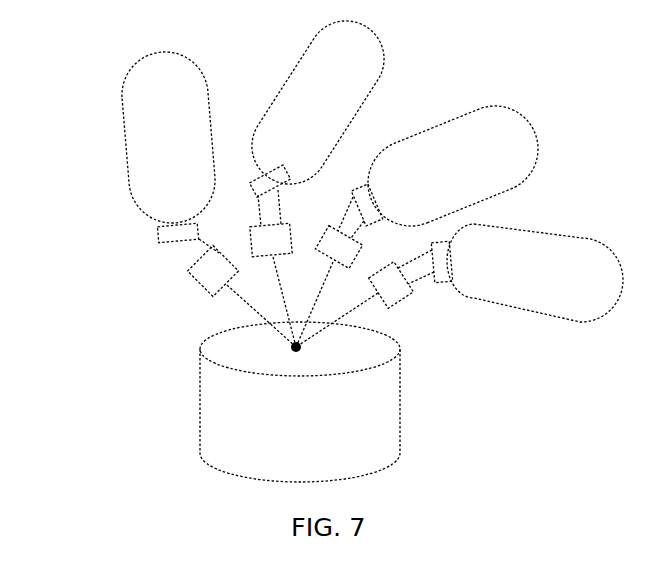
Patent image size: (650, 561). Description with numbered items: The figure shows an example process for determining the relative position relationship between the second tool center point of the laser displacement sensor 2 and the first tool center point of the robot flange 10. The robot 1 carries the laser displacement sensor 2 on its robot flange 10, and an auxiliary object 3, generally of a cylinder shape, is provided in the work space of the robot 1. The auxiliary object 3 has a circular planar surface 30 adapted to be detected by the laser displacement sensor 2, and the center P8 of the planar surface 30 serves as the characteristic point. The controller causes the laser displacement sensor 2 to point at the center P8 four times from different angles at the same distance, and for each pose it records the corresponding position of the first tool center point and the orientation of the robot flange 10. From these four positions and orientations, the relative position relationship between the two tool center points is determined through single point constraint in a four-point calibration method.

The robot 1 is at (148, 118).
The laser displacement sensor 2 is at (197, 284).
The auxiliary object 3 is at (215, 397).
The robot flange 10 is at (158, 229).
The planar surface 30 is at (225, 350).
The center of the planar surface P8 is at (298, 359).